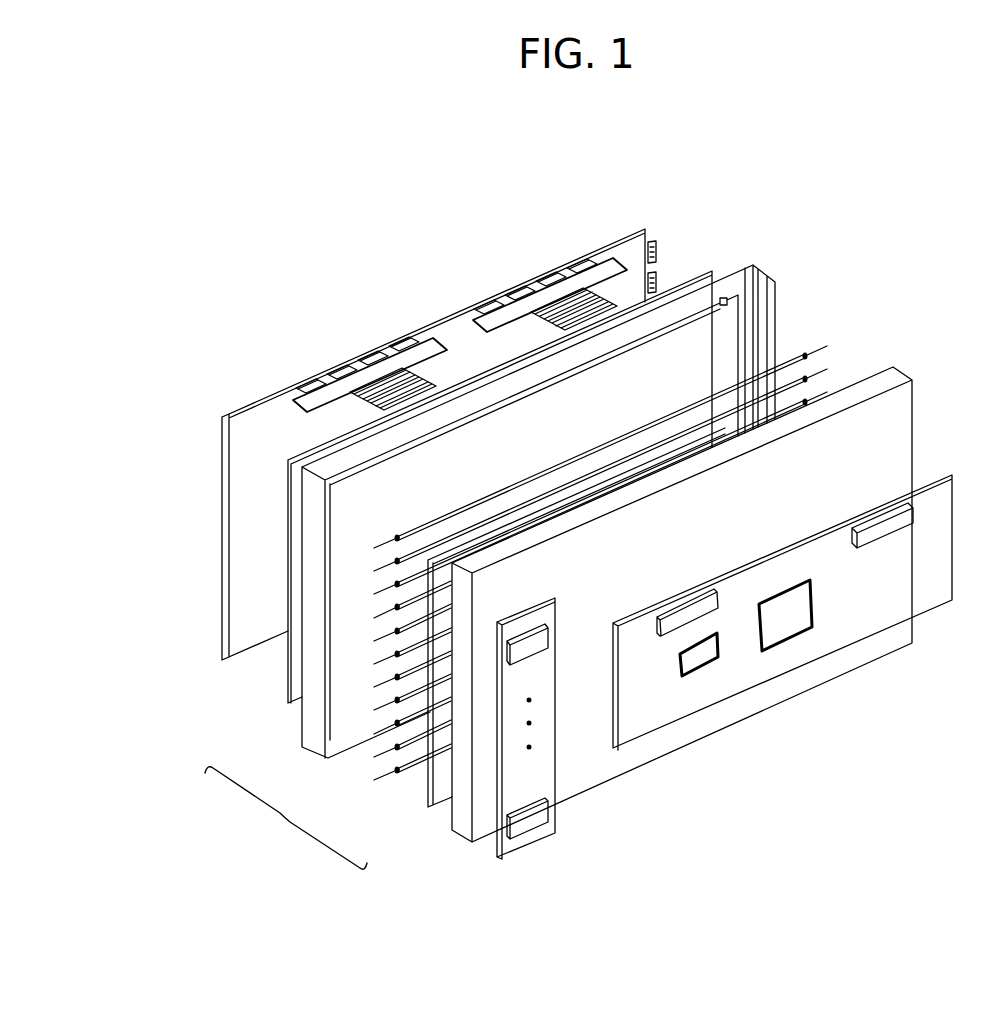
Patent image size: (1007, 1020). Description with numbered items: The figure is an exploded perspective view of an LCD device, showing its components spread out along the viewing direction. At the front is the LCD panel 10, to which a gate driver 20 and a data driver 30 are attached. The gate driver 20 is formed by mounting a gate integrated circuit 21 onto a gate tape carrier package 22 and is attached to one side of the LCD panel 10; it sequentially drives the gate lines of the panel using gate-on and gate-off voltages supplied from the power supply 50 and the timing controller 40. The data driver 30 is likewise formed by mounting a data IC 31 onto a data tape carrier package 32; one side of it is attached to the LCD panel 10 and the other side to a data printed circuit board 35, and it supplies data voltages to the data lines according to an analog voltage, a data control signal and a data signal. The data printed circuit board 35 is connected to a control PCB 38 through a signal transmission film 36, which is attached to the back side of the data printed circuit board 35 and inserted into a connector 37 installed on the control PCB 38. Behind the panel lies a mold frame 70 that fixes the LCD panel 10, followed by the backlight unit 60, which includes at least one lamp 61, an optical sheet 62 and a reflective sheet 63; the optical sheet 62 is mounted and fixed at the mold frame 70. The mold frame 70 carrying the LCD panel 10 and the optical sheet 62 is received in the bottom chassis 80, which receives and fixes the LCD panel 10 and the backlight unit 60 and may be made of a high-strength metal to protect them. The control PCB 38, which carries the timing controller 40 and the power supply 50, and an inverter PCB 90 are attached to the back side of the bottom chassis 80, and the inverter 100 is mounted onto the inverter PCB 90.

The LCD panel 10 is at (203, 502).
The gate driver 20 is at (703, 245).
The gate integrated circuit 21 is at (660, 282).
The gate tape carrier package 22 is at (657, 249).
The data driver 30 is at (456, 312).
The data IC 31 is at (339, 364).
The data tape carrier package 32 is at (367, 352).
The data printed circuit board 35 is at (431, 347).
The signal transmission film 36 is at (563, 301).
The connector 37 is at (903, 500).
The control printed circuit board 38 is at (805, 578).
The timing controller 40 is at (790, 601).
The power supply 50 is at (703, 648).
The backlight unit 60 is at (286, 818).
The lamp 61 is at (397, 752).
The optical sheet 62 is at (296, 704).
The reflective sheet 63 is at (432, 788).
The mold frame 70 is at (770, 271).
The bottom chassis 80 is at (899, 368).
The inverter PCB 90 is at (564, 753).
The inverter 100 is at (535, 836).